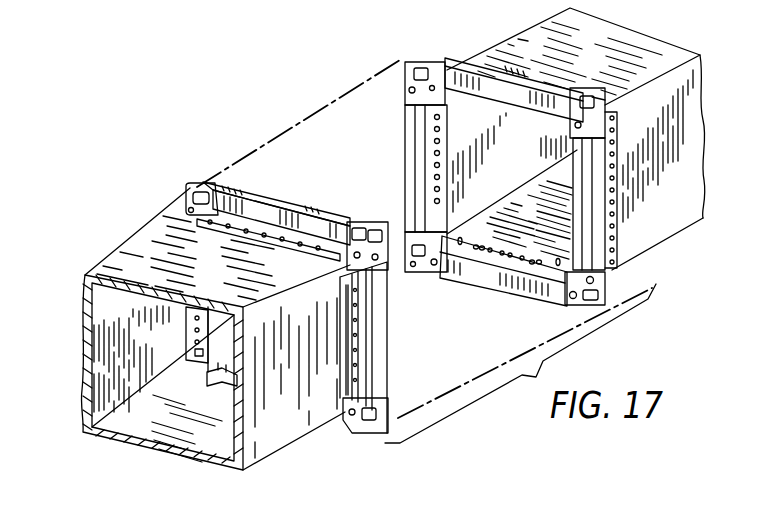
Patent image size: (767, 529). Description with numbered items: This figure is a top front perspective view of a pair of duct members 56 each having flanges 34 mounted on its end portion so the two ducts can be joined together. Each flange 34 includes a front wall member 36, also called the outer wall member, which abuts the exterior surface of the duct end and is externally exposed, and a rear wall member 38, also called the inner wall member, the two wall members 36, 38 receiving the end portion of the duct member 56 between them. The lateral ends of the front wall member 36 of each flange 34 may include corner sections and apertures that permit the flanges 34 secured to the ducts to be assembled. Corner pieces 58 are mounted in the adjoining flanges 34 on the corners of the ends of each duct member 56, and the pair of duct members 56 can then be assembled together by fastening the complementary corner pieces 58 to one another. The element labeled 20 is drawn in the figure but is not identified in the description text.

The connector / fastener 20 is at (184, 365).
The flange 34 is at (242, 184).
The front wall member 36 is at (266, 232).
The rear wall member 38 is at (186, 322).
The duct member 56 is at (155, 253).
The corner pieces 58 is at (187, 197).